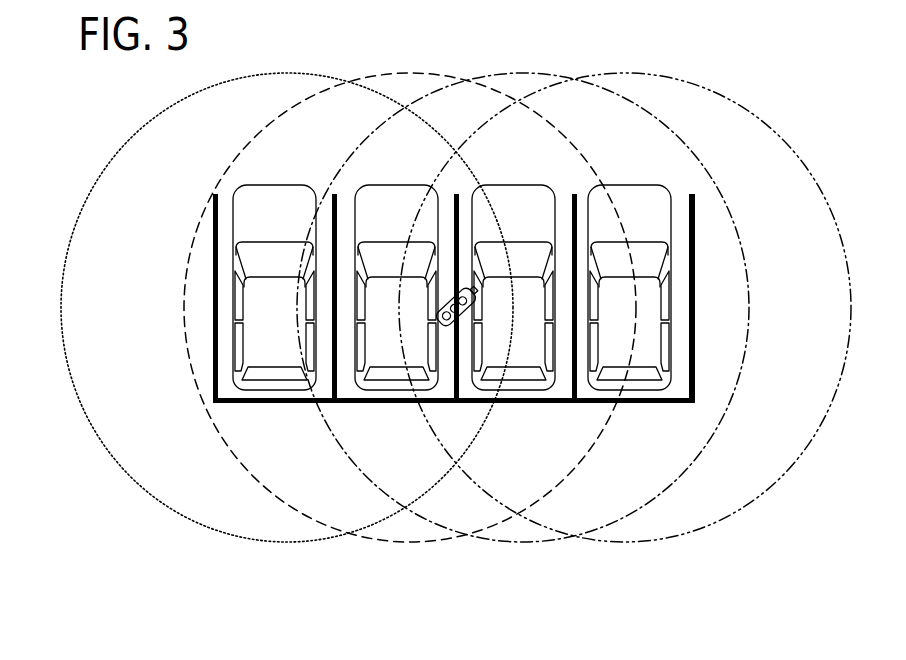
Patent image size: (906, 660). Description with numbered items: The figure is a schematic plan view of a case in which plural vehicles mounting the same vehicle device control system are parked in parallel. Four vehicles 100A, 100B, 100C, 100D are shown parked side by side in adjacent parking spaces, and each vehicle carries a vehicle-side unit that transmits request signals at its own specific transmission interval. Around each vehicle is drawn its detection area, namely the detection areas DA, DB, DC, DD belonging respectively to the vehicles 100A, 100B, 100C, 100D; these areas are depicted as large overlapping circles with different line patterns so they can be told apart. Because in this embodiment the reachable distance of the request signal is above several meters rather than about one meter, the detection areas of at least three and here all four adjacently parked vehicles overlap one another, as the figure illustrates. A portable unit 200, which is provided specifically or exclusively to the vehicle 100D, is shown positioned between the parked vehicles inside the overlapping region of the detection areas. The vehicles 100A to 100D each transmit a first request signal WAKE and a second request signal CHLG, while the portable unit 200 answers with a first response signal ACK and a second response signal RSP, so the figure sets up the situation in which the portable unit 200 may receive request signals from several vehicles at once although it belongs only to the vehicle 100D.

The vehicle 100A is at (272, 192).
The vehicle 100B is at (387, 192).
The vehicle 100C is at (513, 192).
The vehicle 100D is at (623, 192).
The portable unit 200 is at (448, 324).
The detection area DA is at (172, 510).
The detection area DB is at (371, 542).
The detection area DC is at (540, 542).
The detection area DD is at (723, 520).